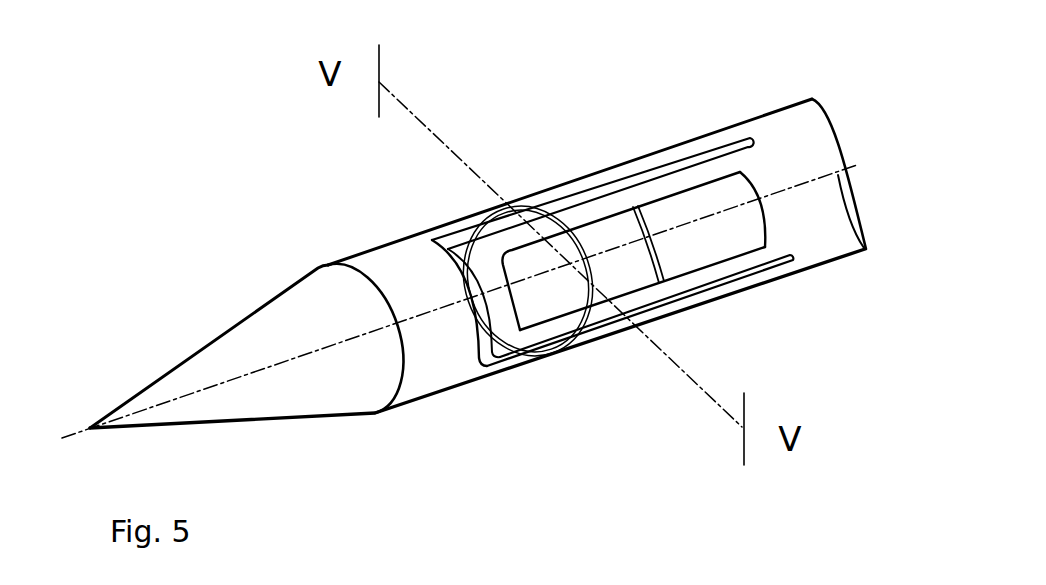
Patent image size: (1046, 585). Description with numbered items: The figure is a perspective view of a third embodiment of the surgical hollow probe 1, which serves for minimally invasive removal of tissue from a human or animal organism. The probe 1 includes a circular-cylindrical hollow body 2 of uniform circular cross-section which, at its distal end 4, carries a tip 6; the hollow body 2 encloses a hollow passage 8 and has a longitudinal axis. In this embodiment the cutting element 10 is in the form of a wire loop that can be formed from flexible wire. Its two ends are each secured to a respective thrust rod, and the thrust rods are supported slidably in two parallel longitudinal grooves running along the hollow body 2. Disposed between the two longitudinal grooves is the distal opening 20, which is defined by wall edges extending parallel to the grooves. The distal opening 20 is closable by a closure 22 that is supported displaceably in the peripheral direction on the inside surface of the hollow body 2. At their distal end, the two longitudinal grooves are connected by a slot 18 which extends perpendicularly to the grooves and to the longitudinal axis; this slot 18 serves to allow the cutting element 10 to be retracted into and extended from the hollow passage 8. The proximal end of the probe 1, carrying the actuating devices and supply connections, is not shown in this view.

The surgical hollow probe 1 is at (640, 355).
The hollow body 2 is at (792, 183).
The distal end 4 is at (237, 318).
The tip 6 is at (195, 390).
The hollow passage 8 is at (857, 225).
The cutting element 10 is at (523, 207).
The slot 18 is at (438, 244).
The distal opening 20 is at (565, 307).
The closure 22 is at (734, 249).